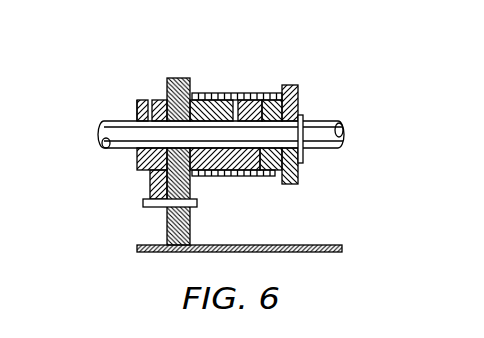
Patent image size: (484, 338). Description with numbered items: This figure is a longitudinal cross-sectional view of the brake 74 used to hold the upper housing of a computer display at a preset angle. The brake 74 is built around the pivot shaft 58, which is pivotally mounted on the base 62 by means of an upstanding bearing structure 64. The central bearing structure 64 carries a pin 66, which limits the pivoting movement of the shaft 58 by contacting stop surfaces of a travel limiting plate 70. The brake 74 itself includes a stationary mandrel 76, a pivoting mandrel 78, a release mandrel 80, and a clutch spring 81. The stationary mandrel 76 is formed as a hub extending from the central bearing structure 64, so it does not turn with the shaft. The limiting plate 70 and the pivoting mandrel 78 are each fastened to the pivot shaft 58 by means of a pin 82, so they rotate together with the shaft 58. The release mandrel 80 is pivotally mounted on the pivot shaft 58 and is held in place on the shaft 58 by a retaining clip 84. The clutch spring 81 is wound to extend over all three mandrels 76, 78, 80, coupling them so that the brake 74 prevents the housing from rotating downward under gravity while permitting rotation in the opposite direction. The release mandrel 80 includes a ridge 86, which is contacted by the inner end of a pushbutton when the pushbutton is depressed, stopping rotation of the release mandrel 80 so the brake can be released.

The pivot shaft 58 is at (322, 120).
The base 62 is at (150, 245).
The bearing structure 64 is at (153, 99).
The pin 66 is at (145, 203).
The travel limiting plate 70 is at (137, 113).
The brake 74 is at (226, 81).
The stationary mandrel 76 is at (191, 96).
The pivoting mandrel 78 is at (237, 177).
The release mandrel 80 is at (277, 178).
The clutch spring 81 is at (258, 93).
The pin 82 is at (150, 99).
The retaining clip 84 is at (303, 157).
The ridge 86 is at (288, 85).